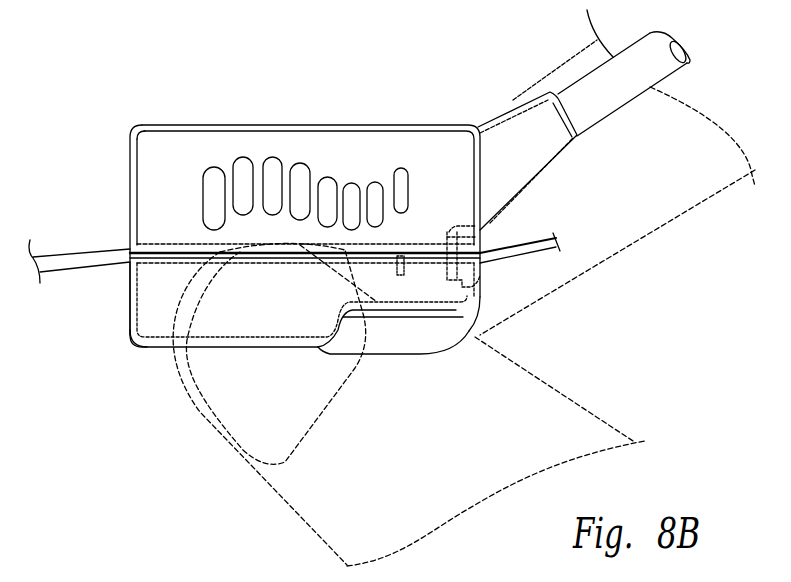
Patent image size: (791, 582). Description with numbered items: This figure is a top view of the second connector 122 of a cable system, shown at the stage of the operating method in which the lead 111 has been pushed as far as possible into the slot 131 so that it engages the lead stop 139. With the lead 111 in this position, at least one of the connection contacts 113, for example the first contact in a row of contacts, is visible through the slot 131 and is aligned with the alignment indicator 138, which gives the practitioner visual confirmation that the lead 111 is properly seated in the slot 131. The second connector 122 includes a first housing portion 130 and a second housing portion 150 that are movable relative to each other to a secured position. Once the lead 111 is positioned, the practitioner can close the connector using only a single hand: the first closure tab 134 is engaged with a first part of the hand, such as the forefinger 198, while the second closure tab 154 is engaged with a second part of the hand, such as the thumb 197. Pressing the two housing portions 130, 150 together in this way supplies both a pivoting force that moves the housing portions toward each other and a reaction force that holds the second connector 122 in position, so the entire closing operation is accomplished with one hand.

The lead 111 is at (100, 253).
The connection contacts 113 is at (398, 198).
The second connector 122 is at (216, 74).
The first housing portion 130 is at (477, 172).
The slot 131 is at (207, 253).
The first closure tab 134 is at (147, 348).
The alignment indicator 138 is at (397, 278).
The lead stop 139 is at (433, 248).
The second housing portion 150 is at (481, 313).
The second closure tab 154 is at (437, 335).
The thumb 197 is at (232, 450).
The forefinger 198 is at (634, 245).